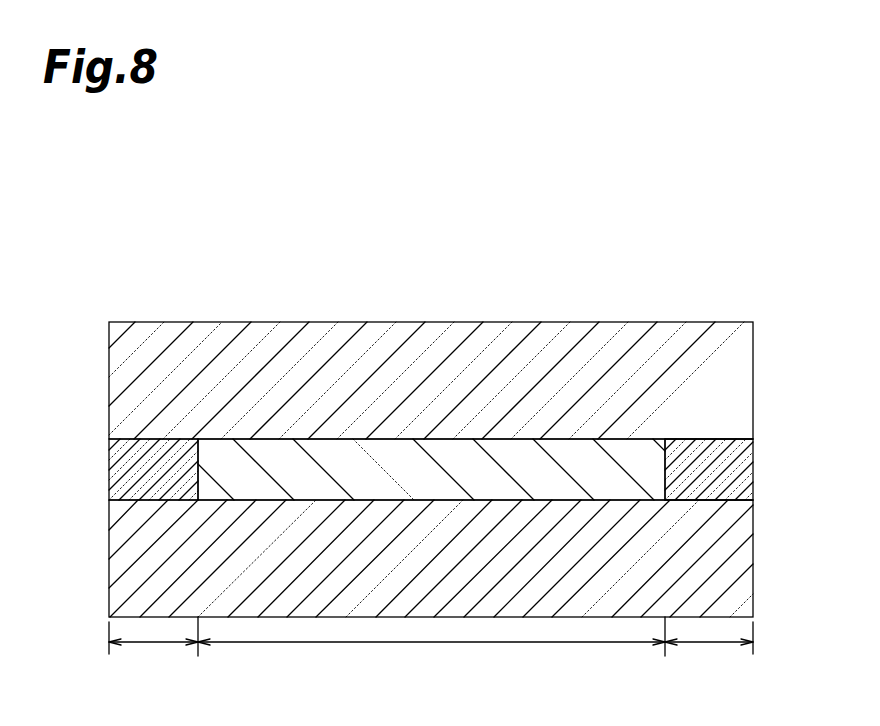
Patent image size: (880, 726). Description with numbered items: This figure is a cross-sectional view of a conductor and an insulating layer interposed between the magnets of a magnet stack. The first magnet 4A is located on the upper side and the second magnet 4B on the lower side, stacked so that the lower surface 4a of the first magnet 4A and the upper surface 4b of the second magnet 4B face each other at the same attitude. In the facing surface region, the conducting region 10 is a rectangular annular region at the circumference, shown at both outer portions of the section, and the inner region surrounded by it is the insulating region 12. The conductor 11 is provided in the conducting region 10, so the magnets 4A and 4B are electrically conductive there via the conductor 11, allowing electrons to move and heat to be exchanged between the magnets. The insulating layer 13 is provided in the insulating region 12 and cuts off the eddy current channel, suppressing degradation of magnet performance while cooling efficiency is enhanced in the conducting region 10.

The first magnet 4A is at (743, 378).
The second magnet 4B is at (742, 557).
The lower surface 4a is at (712, 449).
The upper surface 4b is at (710, 497).
The conductor 11 is at (150, 447).
The insulating layer 13 is at (450, 450).
The conducting region 10 is at (431, 650).
The insulating region 12 is at (431, 661).